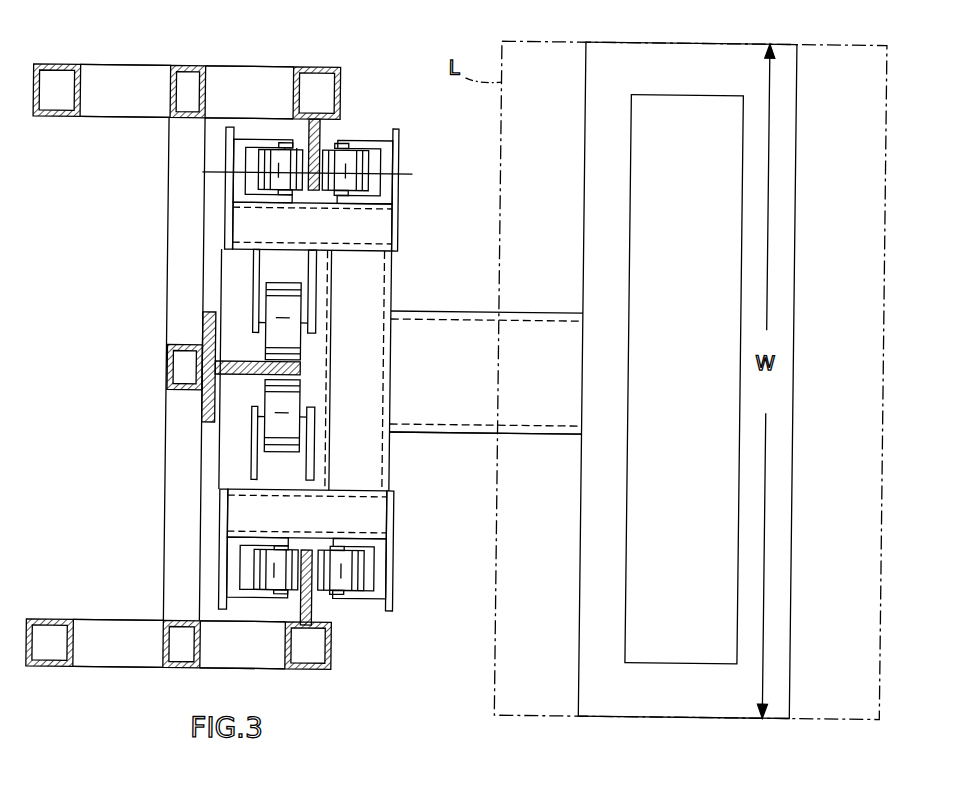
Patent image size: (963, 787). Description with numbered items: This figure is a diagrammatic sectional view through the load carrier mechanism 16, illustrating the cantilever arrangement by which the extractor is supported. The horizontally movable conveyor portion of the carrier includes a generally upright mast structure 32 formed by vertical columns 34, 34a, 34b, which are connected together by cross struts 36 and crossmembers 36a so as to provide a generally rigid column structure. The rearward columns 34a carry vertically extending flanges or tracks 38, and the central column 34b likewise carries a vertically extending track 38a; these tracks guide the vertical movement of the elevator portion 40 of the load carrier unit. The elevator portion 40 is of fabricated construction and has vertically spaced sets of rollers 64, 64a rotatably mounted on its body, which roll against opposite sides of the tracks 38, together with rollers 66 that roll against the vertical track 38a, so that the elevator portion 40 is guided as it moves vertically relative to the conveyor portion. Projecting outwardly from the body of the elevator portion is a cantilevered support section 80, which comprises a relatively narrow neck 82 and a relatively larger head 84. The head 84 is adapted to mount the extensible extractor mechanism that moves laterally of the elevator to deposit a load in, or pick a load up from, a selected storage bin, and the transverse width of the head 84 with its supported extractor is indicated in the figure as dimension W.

The automatic load carrier mechanism 16 is at (256, 71).
The upright mast structure 32 is at (163, 671).
The vertical columns 34 is at (81, 93).
The rearward columns 34a is at (314, 72).
The central column 34b is at (167, 374).
The cross struts 36 is at (274, 85).
The crossmembers 36a is at (174, 508).
The tracks 38 is at (320, 132).
The vertical track 38a is at (298, 380).
The elevator portion 40 is at (396, 309).
The rollers 64 is at (232, 175).
The rollers 64a is at (399, 175).
The rollers 66 is at (286, 316).
The cantilevered support section 80 is at (513, 312).
The neck 82 is at (452, 416).
The head 84 is at (779, 546).